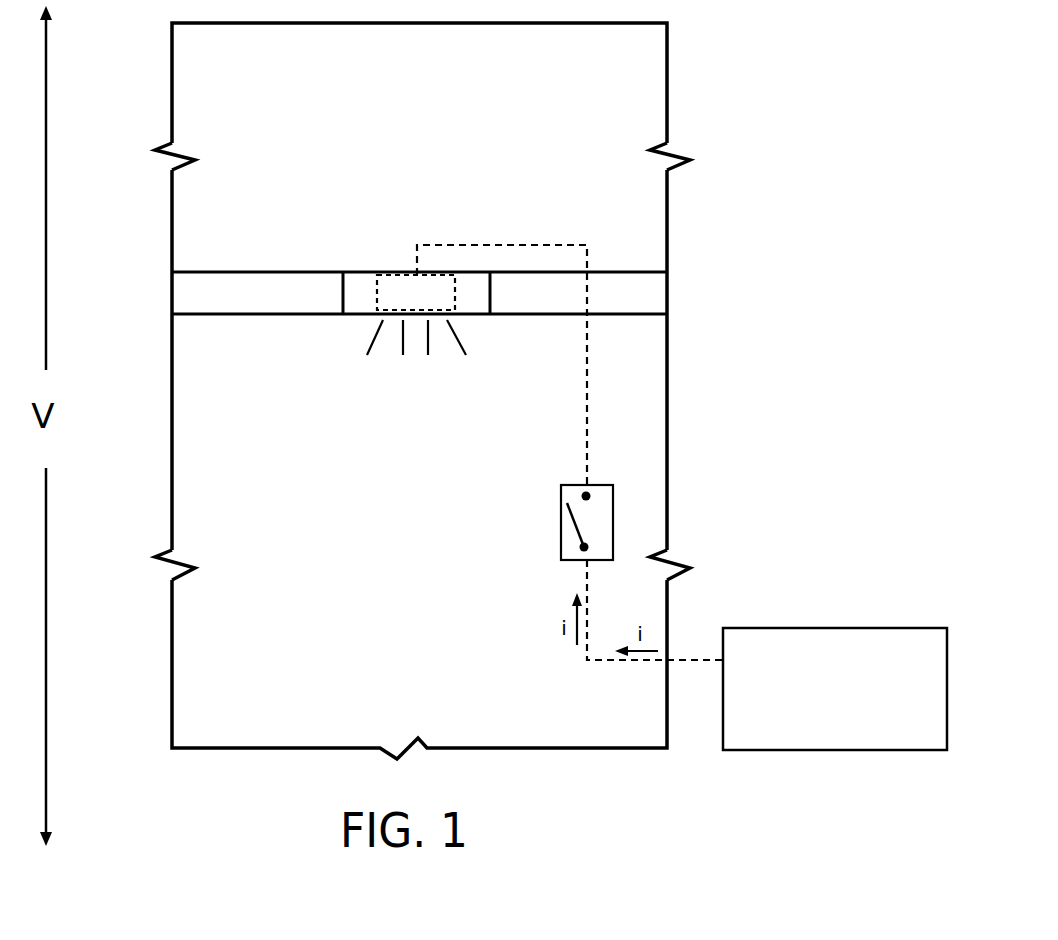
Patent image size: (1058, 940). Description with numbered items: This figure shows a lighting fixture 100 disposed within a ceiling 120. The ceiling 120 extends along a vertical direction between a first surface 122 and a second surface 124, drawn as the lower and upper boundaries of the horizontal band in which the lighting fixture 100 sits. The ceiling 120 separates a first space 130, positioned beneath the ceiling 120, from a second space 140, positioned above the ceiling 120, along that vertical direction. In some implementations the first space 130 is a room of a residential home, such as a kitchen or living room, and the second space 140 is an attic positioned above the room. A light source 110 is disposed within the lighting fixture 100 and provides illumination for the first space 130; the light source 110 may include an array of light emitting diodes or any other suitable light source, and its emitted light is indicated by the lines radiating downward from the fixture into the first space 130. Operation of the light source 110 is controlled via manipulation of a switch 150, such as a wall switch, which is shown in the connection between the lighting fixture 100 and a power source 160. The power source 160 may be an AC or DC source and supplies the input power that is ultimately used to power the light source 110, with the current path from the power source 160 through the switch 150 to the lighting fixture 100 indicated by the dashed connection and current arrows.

The lighting fixture 100 is at (391, 286).
The light source 110 is at (395, 303).
The ceiling 120 is at (382, 295).
The first surface 122 is at (245, 314).
The second surface 124 is at (245, 272).
The first space 130 is at (381, 676).
The second space 140 is at (406, 69).
The switch 150 is at (561, 535).
The power source 160 is at (816, 701).